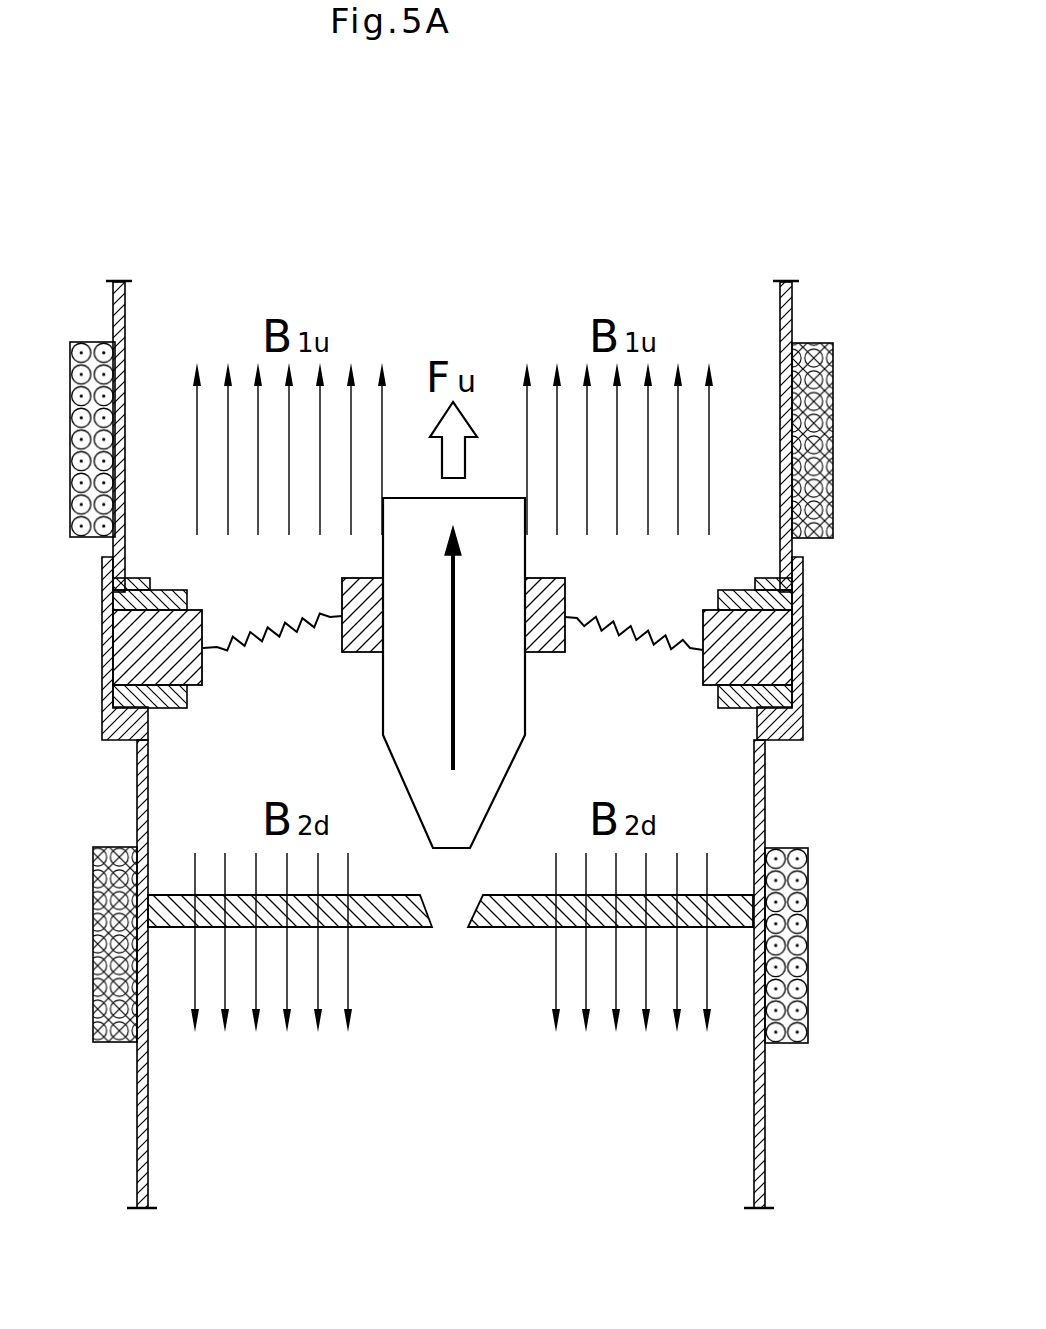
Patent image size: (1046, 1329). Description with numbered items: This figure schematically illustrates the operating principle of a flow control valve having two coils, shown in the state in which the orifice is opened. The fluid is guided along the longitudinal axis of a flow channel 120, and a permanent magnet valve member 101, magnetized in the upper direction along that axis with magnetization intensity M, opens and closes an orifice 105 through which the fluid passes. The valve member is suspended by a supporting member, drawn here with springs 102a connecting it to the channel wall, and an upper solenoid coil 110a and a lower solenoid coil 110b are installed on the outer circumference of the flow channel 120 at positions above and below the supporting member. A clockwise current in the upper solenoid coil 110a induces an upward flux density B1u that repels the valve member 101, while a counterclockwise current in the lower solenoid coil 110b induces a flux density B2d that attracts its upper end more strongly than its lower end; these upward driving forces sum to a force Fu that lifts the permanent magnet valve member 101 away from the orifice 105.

The permanent magnet valve member 101 is at (525, 735).
The spring 102a is at (250, 645).
The orifice 105 is at (452, 910).
The upper solenoid coil 110a is at (808, 338).
The lower solenoid coil 110b is at (810, 915).
The flow channel 120 is at (808, 1107).